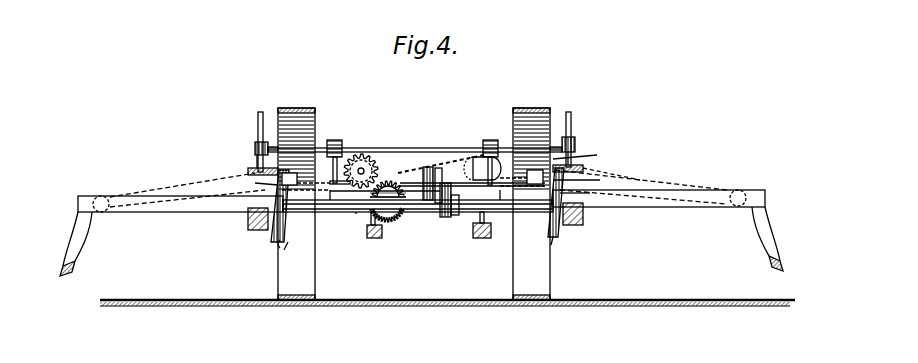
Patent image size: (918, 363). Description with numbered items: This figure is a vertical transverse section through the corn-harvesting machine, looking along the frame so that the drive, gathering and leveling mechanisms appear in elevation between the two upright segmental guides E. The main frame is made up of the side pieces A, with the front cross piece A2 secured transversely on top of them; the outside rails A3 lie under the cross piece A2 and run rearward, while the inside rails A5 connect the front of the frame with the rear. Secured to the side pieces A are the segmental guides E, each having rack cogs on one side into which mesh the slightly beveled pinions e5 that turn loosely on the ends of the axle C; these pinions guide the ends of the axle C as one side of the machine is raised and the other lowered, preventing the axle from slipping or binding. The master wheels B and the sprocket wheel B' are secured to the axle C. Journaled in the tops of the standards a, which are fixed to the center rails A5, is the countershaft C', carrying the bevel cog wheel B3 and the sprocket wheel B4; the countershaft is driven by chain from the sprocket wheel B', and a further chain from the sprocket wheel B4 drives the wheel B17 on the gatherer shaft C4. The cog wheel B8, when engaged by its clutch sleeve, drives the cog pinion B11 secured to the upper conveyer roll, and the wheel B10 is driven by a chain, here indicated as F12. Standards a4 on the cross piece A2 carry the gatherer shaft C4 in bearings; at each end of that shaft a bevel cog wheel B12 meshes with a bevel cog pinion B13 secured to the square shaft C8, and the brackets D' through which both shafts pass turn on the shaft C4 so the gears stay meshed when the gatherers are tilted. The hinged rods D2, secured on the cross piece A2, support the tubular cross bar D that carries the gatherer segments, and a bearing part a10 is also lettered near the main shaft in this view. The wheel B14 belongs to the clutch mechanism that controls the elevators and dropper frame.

The side pieces A is at (255, 231).
The front cross piece A2 is at (178, 236).
The outside rails A3 is at (84, 237).
The inside rails A5 is at (374, 238).
The master wheels B is at (414, 204).
The sprocket wheel B' is at (430, 226).
The bevel cog wheel B3 is at (473, 167).
The sprocket wheel B4 is at (438, 205).
The cog wheel B8 is at (394, 224).
The wheel B10 is at (545, 166).
The cog pinion B11 is at (376, 171).
The bevel cog wheel B12 is at (611, 178).
The bevel cog pinion B13 is at (248, 171).
The wheel B14 is at (256, 184).
The wheel B17 is at (429, 167).
The axle C is at (325, 218).
The shaft C' is at (447, 225).
The shaft C4 is at (500, 205).
The square shaft C8 is at (258, 131).
The tubular cross bar D is at (415, 140).
The brackets D' is at (417, 156).
The rods D2 is at (336, 140).
The segmental guides E is at (294, 238).
The chain F12 is at (448, 163).
The standards a is at (372, 216).
The standards a4 is at (292, 182).
The shaft bearing a10 is at (357, 213).
The pinions e5 is at (284, 212).